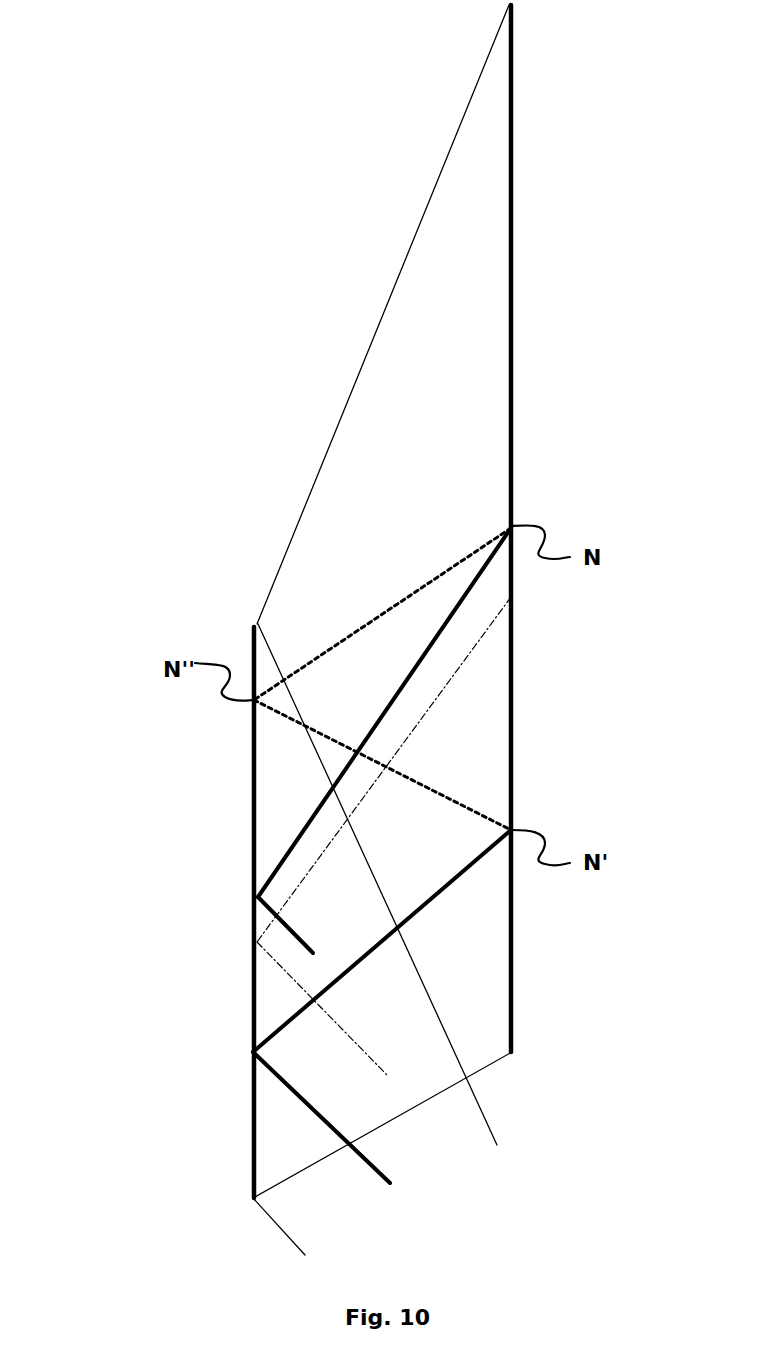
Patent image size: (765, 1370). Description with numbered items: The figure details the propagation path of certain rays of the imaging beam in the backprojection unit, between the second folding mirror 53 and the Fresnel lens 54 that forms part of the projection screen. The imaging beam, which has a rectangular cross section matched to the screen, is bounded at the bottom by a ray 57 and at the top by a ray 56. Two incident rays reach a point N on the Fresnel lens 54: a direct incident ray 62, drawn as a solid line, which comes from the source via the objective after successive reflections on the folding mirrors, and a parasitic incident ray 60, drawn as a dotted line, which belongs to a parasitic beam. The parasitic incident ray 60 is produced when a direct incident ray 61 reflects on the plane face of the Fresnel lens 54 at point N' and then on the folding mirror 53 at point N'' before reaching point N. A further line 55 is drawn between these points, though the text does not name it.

The second folding mirror 53 is at (250, 1103).
The Fresnel lens 54 is at (512, 725).
The dotted line N'' to N' 55 is at (368, 777).
The ray 56 is at (307, 517).
The ray 57 is at (283, 1245).
The parasitic incident ray 60 is at (328, 655).
The direct incident ray 61 is at (452, 888).
The direct incident ray 62 is at (460, 600).